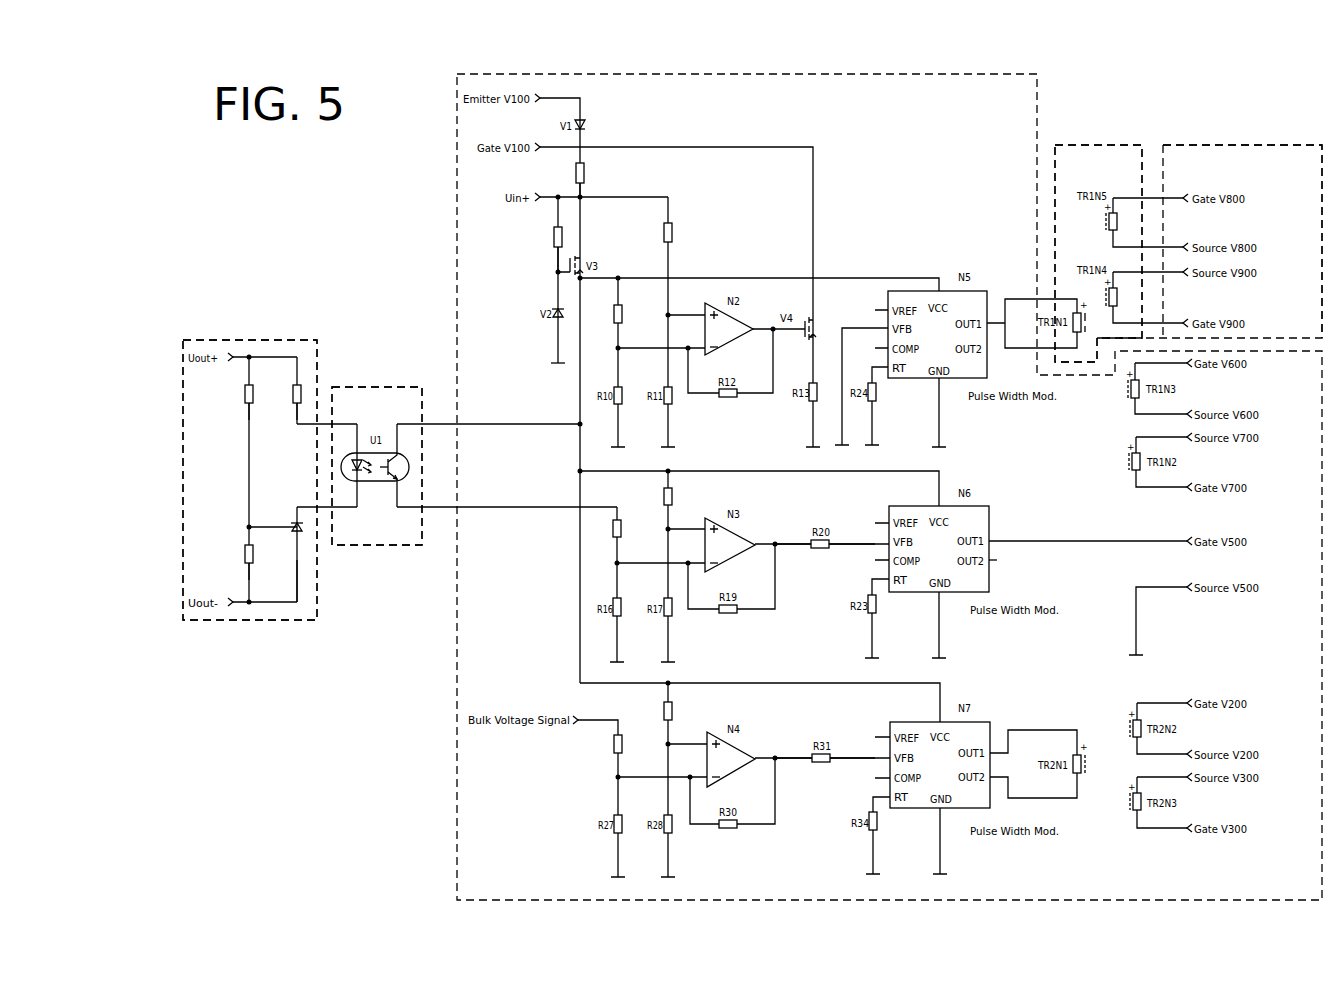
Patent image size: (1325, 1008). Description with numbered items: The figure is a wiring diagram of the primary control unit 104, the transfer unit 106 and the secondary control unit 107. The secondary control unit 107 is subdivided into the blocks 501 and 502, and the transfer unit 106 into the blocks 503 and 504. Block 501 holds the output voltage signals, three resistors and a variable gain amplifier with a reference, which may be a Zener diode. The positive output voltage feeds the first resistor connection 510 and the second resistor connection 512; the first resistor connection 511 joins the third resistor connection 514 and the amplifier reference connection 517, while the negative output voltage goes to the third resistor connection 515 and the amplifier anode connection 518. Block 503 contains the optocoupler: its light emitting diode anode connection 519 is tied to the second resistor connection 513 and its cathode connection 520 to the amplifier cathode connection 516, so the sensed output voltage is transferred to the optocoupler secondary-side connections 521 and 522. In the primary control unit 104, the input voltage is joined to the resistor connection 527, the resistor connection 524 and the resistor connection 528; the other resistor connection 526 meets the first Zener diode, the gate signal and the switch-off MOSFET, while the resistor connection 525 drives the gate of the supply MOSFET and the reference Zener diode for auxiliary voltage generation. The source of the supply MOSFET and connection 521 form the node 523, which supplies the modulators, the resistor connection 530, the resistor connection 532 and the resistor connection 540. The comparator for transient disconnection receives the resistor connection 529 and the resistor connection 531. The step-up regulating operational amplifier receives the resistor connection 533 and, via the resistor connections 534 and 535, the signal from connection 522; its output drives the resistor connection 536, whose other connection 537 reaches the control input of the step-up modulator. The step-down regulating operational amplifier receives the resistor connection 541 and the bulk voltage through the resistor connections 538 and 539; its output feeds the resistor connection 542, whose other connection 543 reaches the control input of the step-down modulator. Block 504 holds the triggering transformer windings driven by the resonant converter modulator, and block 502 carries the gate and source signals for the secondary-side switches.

The primary control unit 104 is at (888, 475).
The transfer unit 106 is at (737, 334).
The secondary control unit 107 is at (752, 371).
The block 501 is at (277, 339).
The block 502 is at (1240, 140).
The block 503 is at (383, 547).
The block 504 is at (1125, 140).
The connection of resistor R1 510 is at (248, 380).
The connection of resistor R1 511 is at (248, 412).
The connection of resistor R2 512 is at (298, 380).
The connection of resistor R2 513 is at (298, 412).
The connection of resistor R6 514 is at (248, 537).
The connection of resistor R6 515 is at (248, 580).
The connection of variable gain amplifier N1 516 is at (304, 506).
The connection of variable gain amplifier N1 517 is at (273, 531).
The connection of variable gain amplifier N1 518 is at (299, 585).
The connection of optocoupler U1 519 is at (357, 422).
The connection of optocoupler U1 520 is at (357, 510).
The connection of optocoupler U1 521 is at (398, 422).
The connection of optocoupler U1 522 is at (397, 510).
The node 523 is at (577, 472).
The connection of resistor R7 524 is at (557, 222).
The connection of resistor R7 525 is at (557, 260).
The connection of resistor R35 526 is at (581, 160).
The connection of resistor R35 527 is at (581, 187).
The connection of resistor R9 528 is at (669, 218).
The connection of resistor R9 529 is at (669, 247).
The connection of resistor R8 530 is at (619, 300).
The connection of resistor R8 531 is at (619, 328).
The connection of resistor R14 532 is at (669, 485).
The connection of resistor R14 533 is at (669, 510).
The connection of resistor R15 534 is at (619, 520).
The connection of resistor R15 535 is at (619, 547).
The connection of resistor R20 536 is at (795, 549).
The connection of resistor R20 537 is at (840, 549).
The connection of resistor R26 538 is at (619, 735).
The connection of resistor R26 539 is at (619, 762).
The connection of resistor R25 540 is at (669, 697).
The connection of resistor R25 541 is at (669, 724).
The connection of resistor R31 542 is at (795, 763).
The connection of resistor R31 543 is at (840, 763).